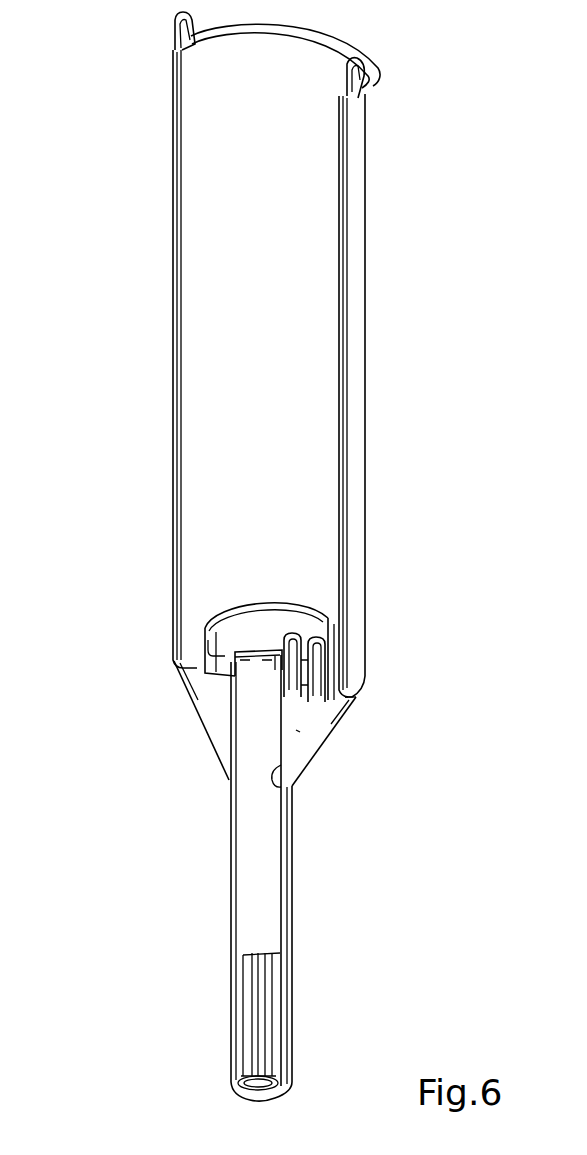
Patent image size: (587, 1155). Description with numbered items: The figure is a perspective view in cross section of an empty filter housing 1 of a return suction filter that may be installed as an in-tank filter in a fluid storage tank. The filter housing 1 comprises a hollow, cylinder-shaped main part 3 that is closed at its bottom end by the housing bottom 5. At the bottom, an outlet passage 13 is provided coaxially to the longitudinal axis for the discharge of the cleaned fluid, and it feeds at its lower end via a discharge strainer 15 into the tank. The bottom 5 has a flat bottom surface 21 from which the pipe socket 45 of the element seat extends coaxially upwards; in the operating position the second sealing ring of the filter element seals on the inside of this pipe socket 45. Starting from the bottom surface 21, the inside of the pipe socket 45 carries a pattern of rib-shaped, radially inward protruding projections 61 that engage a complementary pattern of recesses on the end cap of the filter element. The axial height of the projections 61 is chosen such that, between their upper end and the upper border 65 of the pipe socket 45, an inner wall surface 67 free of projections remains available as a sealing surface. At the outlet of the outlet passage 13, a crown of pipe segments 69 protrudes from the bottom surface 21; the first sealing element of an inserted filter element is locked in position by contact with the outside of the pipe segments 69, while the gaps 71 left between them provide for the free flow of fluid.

The filter housing 1 is at (403, 319).
The main part 3 is at (176, 452).
The housing bottom 5 is at (298, 732).
The outlet passage 13 is at (293, 786).
The discharge strainer 15 is at (292, 1003).
The bottom surface 21 is at (356, 697).
The pipe socket 45 is at (205, 644).
The rib-shaped projections 61 is at (225, 640).
The upper border 65 is at (313, 612).
The inner wall surface 67 is at (300, 632).
The pipe segments 69 is at (257, 660).
The gaps 71 is at (281, 654).